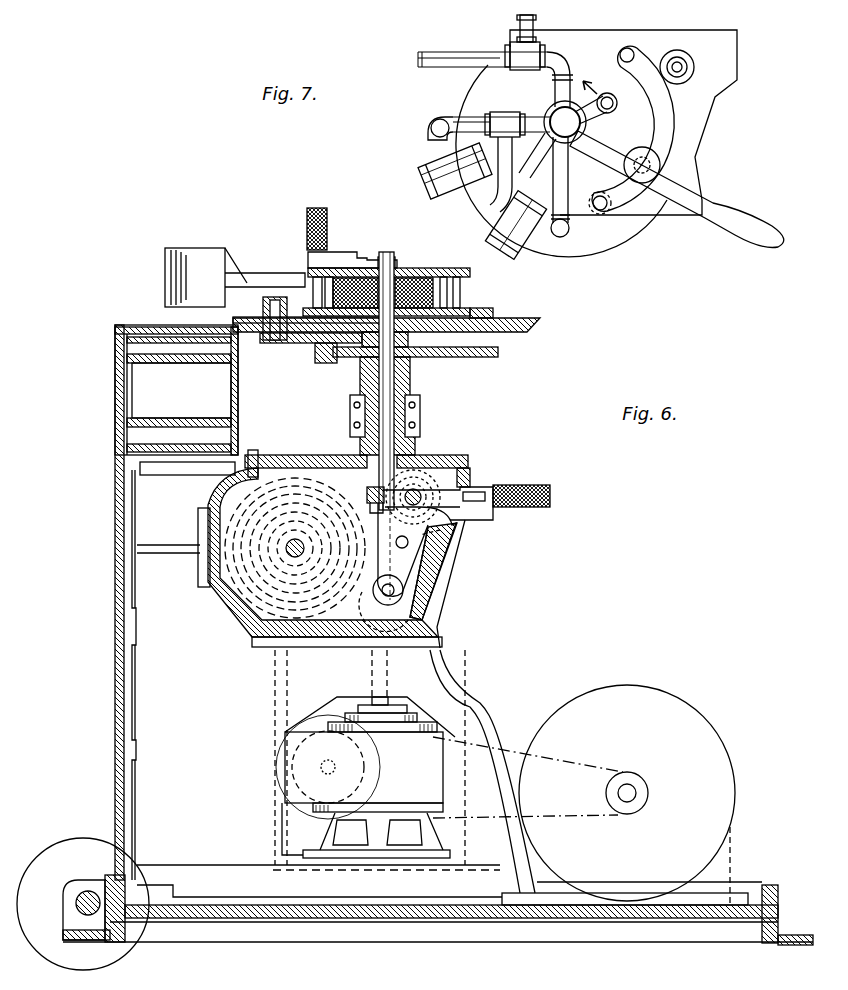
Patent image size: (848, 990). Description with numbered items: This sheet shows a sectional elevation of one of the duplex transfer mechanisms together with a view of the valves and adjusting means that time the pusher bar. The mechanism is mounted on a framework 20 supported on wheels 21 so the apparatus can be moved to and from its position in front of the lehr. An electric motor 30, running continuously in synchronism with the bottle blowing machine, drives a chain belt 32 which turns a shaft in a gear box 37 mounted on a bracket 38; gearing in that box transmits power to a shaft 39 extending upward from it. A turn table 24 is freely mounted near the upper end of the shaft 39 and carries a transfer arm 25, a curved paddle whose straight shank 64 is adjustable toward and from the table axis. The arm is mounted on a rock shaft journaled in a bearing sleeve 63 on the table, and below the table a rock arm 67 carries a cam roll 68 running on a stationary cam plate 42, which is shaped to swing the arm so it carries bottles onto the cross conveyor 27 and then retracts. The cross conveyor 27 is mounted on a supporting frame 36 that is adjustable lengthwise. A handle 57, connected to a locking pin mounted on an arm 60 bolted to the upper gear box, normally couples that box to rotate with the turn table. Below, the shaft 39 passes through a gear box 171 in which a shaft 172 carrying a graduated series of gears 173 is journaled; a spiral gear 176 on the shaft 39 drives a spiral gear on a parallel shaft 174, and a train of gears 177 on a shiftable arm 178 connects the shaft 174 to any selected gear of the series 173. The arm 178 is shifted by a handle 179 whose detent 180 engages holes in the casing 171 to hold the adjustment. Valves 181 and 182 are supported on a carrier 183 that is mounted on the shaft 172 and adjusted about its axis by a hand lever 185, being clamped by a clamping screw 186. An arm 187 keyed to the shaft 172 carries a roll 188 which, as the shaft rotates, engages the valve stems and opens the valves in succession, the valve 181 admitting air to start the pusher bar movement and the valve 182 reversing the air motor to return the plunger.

In FIG. 6, the framework 20 is at (225, 932).
In FIG. 6, the wheels 21 is at (70, 848).
In FIG. 6, the turn table 24 is at (528, 318).
In FIG. 6, the transfer arm 25 is at (180, 248).
In FIG. 6, the cross conveyor 27 is at (140, 327).
In FIG. 6, the electric motor 30 is at (720, 745).
In FIG. 6, the chain belt 32 is at (603, 772).
In FIG. 6, the supporting frame 36 is at (233, 418).
In FIG. 6, the gear box 37 is at (432, 790).
In FIG. 6, the bracket 38 is at (330, 840).
In FIG. 6, the shaft 39 is at (392, 420).
In FIG. 6, the cam plate 42 is at (485, 357).
In FIG. 6, the handle 57 is at (327, 222).
In FIG. 6, the arm 60 is at (332, 262).
In FIG. 6, the bearing sleeve 63 is at (263, 304).
In FIG. 6, the shank 64 is at (248, 278).
In FIG. 6, the rock arm 67 is at (302, 343).
In FIG. 6, the cam roll 68 is at (325, 363).
In FIG. 6, the gear box 171 is at (405, 590).
In FIG. 6, the shaft 172 is at (298, 540).
In FIG. 6, the graduated series of gears 173 is at (200, 508).
In FIG. 7, the shaft 174 is at (694, 70).
In FIG. 6, the shaft 174 is at (420, 490).
In FIG. 6, the spiral gear 176 is at (368, 496).
In FIG. 6, the train of gears 177 is at (442, 548).
In FIG. 6, the arm 178 is at (410, 593).
In FIG. 6, the handle 179 is at (545, 485).
In FIG. 6, the detent 180 is at (478, 492).
In FIG. 7, the valve 181 is at (428, 160).
In FIG. 7, the valve 182 is at (545, 258).
In FIG. 7, the carrier 183 is at (535, 170).
In FIG. 7, the hand lever 185 is at (725, 200).
In FIG. 7, the clamping screw 186 is at (648, 162).
In FIG. 7, the arm 187 is at (609, 112).
In FIG. 7, the roll 188 is at (597, 94).